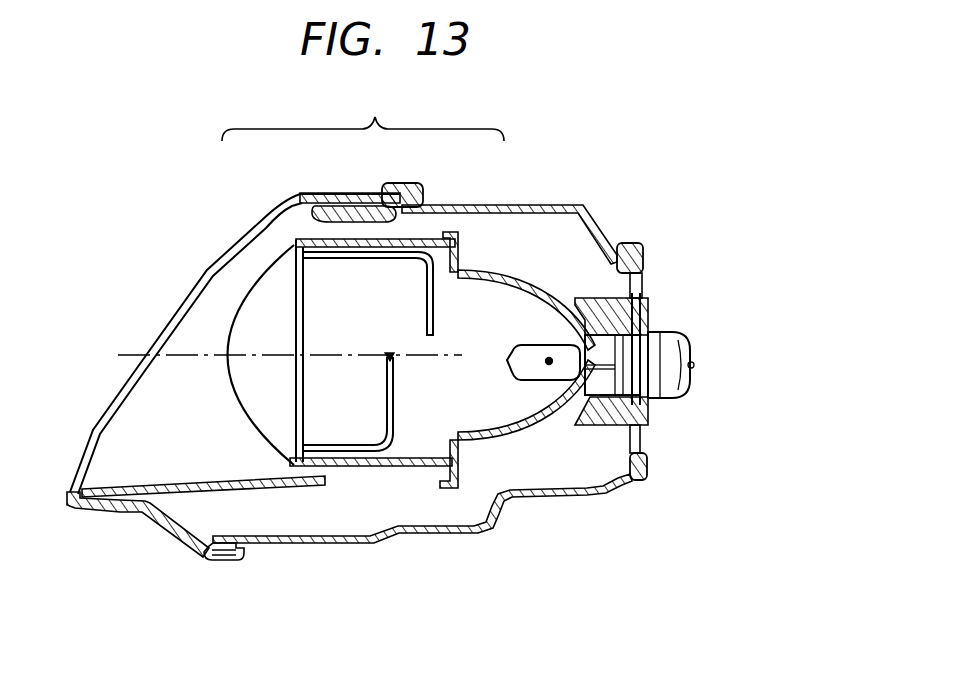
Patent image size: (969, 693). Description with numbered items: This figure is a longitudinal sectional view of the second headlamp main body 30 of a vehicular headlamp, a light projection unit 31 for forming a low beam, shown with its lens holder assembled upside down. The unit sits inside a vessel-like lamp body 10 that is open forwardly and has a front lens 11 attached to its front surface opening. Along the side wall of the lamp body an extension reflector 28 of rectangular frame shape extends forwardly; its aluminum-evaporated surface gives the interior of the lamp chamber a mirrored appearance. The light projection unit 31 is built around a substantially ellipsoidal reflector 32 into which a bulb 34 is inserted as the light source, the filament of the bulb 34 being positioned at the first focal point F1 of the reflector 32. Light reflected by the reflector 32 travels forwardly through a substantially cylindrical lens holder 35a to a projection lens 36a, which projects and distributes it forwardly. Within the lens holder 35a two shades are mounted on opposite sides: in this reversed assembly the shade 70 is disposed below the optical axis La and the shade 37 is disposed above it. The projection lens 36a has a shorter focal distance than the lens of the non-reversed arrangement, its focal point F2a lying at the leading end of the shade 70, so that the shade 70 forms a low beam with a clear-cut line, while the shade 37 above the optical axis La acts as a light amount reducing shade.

The lamp body 10 is at (584, 205).
The front lens 11 is at (211, 272).
The extension reflector 28 is at (177, 495).
The second headlamp main body 30 is at (229, 379).
The light projection unit 31 is at (363, 115).
The reflector 32 is at (513, 275).
The bulb 34 is at (517, 350).
The lens holder 35a is at (397, 233).
The projection lens 36a is at (265, 266).
The shade 37 is at (427, 292).
The shade 70 is at (385, 420).
The optical axis position La is at (140, 351).
The first focal point F1 is at (548, 359).
The focal point of projection lens F2a is at (388, 354).